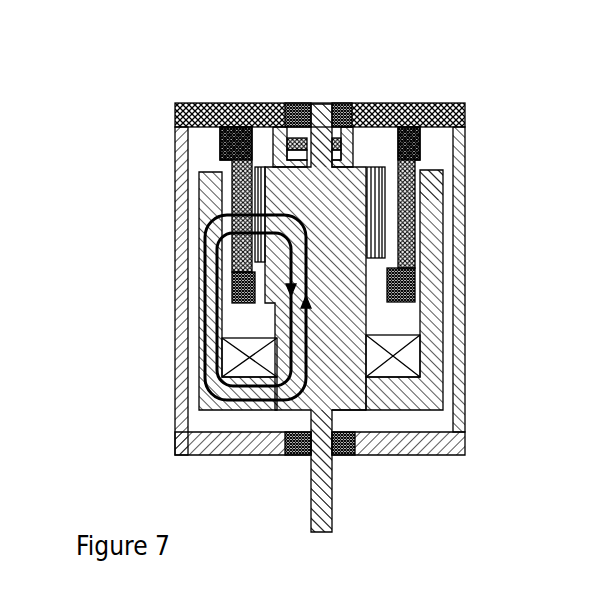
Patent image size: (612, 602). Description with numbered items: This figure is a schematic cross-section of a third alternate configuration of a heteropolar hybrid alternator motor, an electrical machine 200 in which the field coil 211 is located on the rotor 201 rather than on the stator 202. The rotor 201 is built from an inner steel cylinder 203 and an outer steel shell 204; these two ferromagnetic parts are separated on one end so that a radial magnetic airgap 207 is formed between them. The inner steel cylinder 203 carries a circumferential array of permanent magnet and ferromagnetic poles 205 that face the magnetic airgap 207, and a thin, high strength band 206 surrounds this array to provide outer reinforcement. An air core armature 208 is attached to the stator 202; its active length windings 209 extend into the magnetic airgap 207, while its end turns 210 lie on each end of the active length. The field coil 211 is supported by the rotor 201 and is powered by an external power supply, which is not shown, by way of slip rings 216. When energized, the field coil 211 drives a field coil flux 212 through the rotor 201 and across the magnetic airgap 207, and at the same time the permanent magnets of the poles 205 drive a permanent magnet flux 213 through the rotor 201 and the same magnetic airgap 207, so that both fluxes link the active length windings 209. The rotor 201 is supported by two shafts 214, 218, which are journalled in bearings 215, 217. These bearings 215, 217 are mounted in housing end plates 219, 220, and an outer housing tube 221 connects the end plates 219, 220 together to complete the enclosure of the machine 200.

The electrical machine 200 is at (116, 113).
The rotor 201 is at (337, 298).
The stator 202 is at (350, 281).
The inner steel cylinder 203 is at (360, 412).
The outer steel shell 204 is at (442, 277).
The permanent magnet and ferromagnetic poles 205 is at (268, 214).
The thin, high strength band 206 is at (257, 214).
The radial magnetic airgap 207 is at (417, 165).
The air core armature 208 is at (421, 136).
The active length windings 209 is at (414, 222).
The end turns 210 is at (392, 303).
The field coil 211 is at (409, 357).
The field coil flux 212 is at (240, 400).
The permanent magnet flux 213 is at (207, 300).
The shaft 214 is at (329, 103).
The bearing 215 is at (340, 87).
The slip rings 216 is at (294, 104).
The bearing 217 is at (348, 457).
The shaft 218 is at (312, 497).
The housing end plate 219 is at (466, 108).
The housing end plate 220 is at (443, 456).
The outer housing tube 221 is at (466, 410).